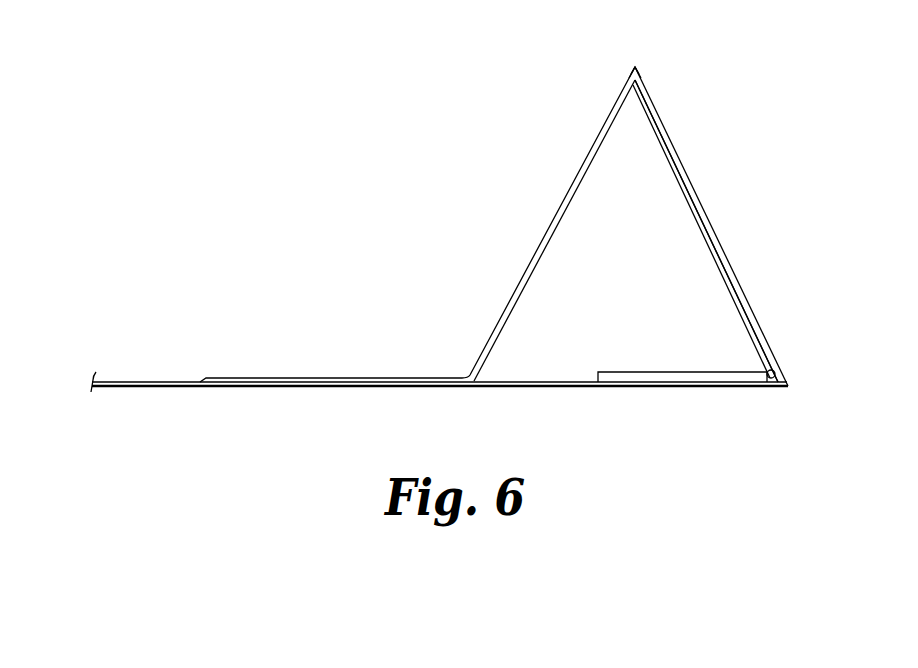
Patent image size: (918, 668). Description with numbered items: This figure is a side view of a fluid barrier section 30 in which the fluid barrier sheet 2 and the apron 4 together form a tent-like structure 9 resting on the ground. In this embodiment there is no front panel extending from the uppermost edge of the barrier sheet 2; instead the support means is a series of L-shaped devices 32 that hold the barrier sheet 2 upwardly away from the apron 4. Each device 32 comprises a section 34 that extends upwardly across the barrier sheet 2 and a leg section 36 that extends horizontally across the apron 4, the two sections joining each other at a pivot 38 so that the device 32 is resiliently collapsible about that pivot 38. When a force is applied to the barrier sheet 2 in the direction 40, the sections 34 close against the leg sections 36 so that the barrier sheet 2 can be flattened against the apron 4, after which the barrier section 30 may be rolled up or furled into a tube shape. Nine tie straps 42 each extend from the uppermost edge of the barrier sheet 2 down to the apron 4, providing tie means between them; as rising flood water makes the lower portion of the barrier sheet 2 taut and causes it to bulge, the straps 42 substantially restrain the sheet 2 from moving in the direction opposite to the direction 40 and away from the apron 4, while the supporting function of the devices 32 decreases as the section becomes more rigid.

The fluid barrier sheet 2 is at (672, 108).
The apron 4 is at (318, 399).
The tent-like structure 9 is at (648, 57).
The fluid barrier section 30 is at (439, 228).
The L-shaped device 32 is at (680, 205).
The section 34 is at (708, 248).
The leg section 36 is at (677, 372).
The pivot 38 is at (769, 381).
The direction 40 is at (616, 45).
The tie strap 42 is at (341, 378).